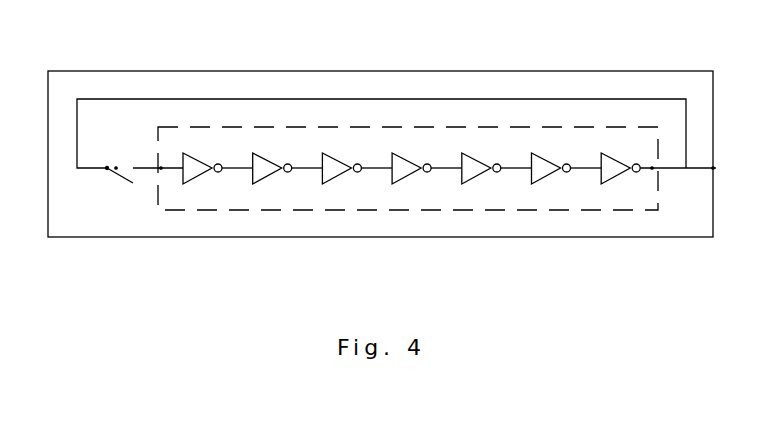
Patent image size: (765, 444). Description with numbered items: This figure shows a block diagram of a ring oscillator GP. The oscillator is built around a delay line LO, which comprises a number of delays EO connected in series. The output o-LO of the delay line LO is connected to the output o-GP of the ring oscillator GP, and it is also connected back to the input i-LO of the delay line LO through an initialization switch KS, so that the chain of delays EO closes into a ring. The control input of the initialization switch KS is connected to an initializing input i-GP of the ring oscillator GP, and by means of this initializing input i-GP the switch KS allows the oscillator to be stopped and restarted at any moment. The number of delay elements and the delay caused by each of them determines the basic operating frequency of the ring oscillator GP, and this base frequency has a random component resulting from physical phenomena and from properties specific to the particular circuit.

The initialization switch KS is at (123, 178).
The ring oscillator GP is at (235, 71).
The delay line LO is at (360, 127).
The delay EO is at (478, 157).
The initializing input of the ring oscillator i-GP is at (184, 308).
The input of the delay line i-LO is at (161, 170).
The output of the delay line o-LO is at (652, 170).
The output of the ring oscillator o-GP is at (713, 170).